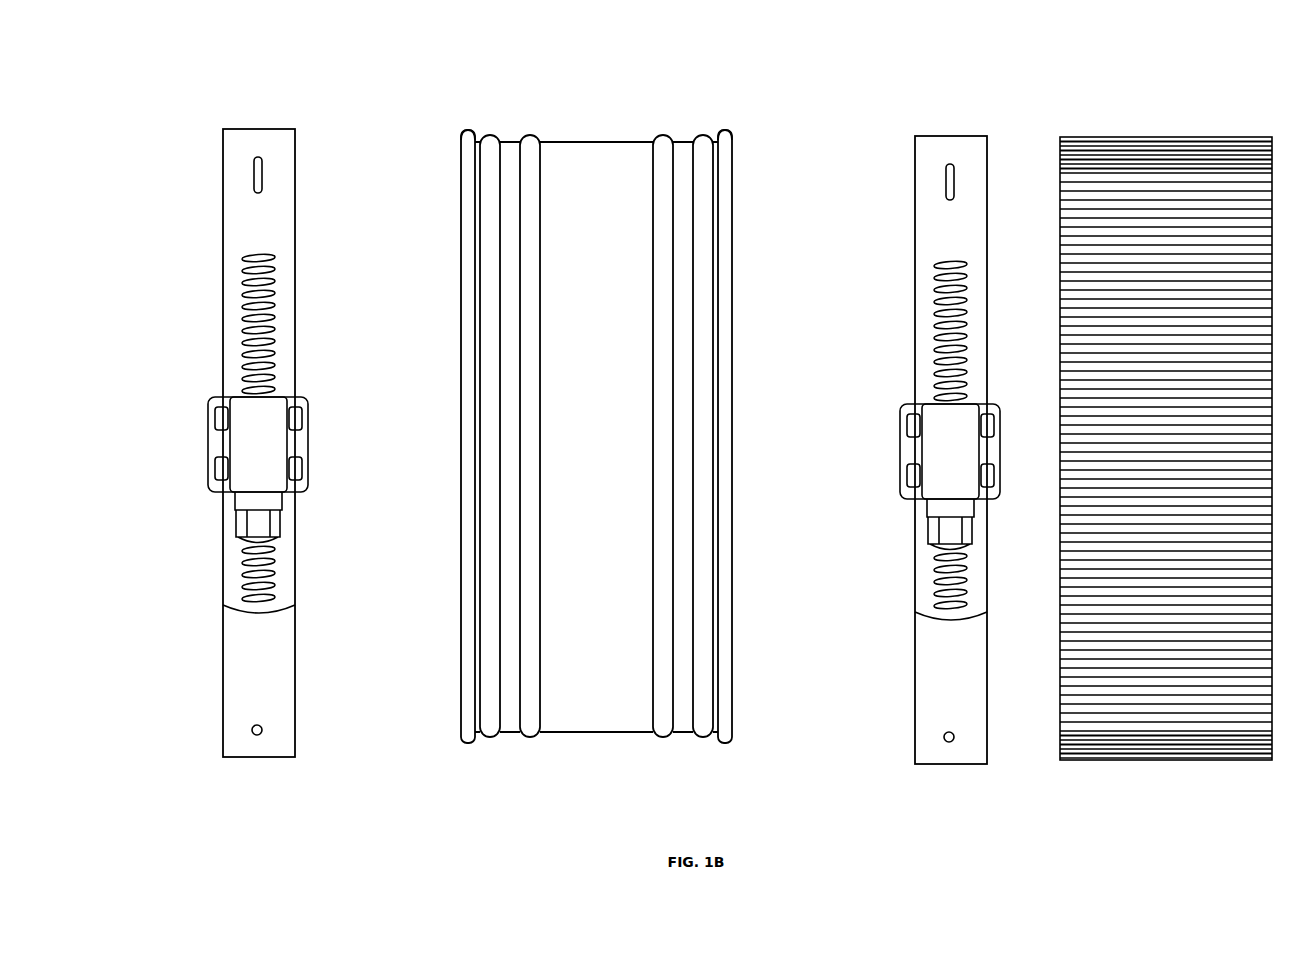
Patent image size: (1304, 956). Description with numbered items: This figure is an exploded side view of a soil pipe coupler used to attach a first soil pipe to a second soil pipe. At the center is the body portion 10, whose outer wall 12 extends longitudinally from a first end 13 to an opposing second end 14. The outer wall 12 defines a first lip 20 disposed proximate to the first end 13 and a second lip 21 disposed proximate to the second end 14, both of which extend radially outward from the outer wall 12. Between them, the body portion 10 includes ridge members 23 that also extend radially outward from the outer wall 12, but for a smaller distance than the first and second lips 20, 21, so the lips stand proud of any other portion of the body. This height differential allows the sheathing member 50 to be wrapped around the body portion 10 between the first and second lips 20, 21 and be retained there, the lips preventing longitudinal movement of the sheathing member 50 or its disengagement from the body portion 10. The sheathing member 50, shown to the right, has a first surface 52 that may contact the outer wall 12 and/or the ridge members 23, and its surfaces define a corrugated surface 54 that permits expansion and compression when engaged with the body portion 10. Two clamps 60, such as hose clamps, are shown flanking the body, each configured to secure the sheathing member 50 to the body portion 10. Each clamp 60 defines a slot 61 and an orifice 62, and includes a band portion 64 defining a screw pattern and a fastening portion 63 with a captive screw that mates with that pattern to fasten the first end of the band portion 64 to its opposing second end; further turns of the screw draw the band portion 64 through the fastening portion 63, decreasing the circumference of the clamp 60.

The body portion 10 is at (592, 416).
The outer wall 12 is at (575, 170).
The first end 13 is at (456, 383).
The second end 14 is at (740, 386).
The first lip 20 is at (468, 127).
The second lip 21 is at (727, 127).
The ridge member 23 is at (490, 743).
The sheathing member 50 is at (1158, 436).
The first surface 52 is at (1118, 165).
The corrugated surface 54 is at (1148, 602).
The clamp 60 is at (258, 117).
The slot 61 is at (248, 167).
The orifice 62 is at (247, 731).
The fastening portion 63 is at (248, 467).
The band portion 64 is at (241, 645).